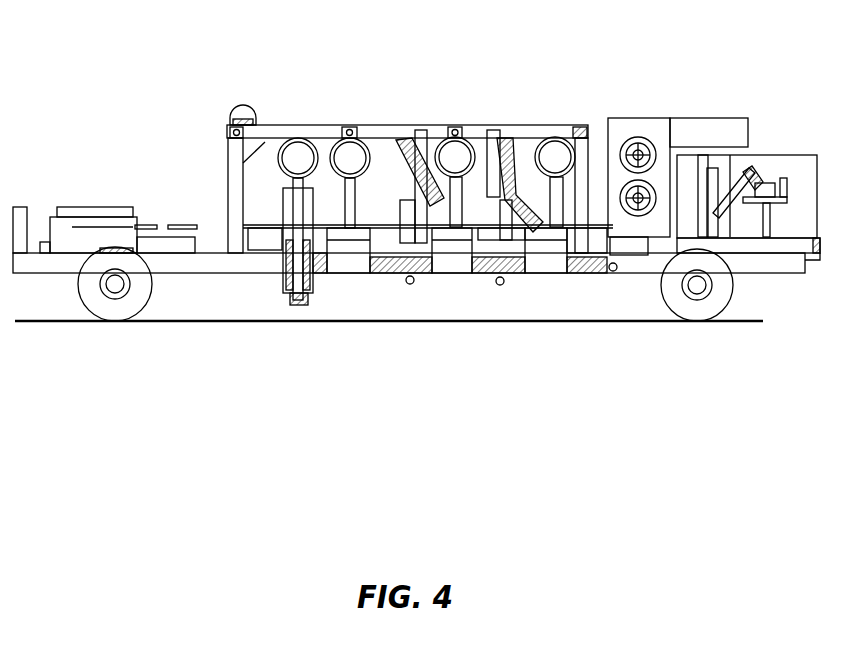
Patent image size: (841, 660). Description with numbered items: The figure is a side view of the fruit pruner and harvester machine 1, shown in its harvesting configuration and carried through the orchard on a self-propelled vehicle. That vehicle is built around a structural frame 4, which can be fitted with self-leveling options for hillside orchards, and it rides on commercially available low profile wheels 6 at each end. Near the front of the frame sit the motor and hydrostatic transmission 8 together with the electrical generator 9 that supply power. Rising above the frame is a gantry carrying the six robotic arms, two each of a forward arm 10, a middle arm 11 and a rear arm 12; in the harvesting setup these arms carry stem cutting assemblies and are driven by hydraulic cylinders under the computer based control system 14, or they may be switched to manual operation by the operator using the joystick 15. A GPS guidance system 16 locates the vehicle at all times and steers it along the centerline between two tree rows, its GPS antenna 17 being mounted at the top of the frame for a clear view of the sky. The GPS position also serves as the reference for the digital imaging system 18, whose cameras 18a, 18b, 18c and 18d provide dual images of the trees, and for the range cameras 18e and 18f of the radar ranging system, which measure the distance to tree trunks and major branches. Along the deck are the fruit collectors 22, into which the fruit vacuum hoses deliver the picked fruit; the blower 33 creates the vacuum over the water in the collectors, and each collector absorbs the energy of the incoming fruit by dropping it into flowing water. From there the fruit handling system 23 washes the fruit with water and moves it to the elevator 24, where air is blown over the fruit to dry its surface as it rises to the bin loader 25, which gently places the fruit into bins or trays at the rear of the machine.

The harvester machine 1 is at (407, 388).
The structural frame 4 is at (790, 273).
The low profile wheels 6 is at (147, 305).
The motor and hydrostatic transmission 8 is at (148, 223).
The electrical generator 9 is at (42, 240).
The forward robotic arm 10 is at (347, 158).
The middle robotic arm 11 is at (455, 157).
The rear robotic arm 12 is at (555, 157).
The computer based control system 14 is at (706, 150).
The manual joystick 15 is at (768, 182).
The global positioning system guidance system 16 is at (717, 177).
The GPS antenna 17 is at (243, 107).
The digital imaging system 18 is at (742, 177).
The DIS camera 18a is at (227, 130).
The DIS camera 18b is at (350, 127).
The DIS camera 18c is at (453, 127).
The DIS camera 18d is at (577, 125).
The DIS range camera 18e is at (412, 285).
The DIS range camera 18f is at (497, 285).
The fruit collector 22 is at (352, 277).
The fruit handling system 23 is at (632, 255).
The elevator 24 is at (630, 137).
The bin loader 25 is at (688, 133).
The blower 33 is at (240, 240).